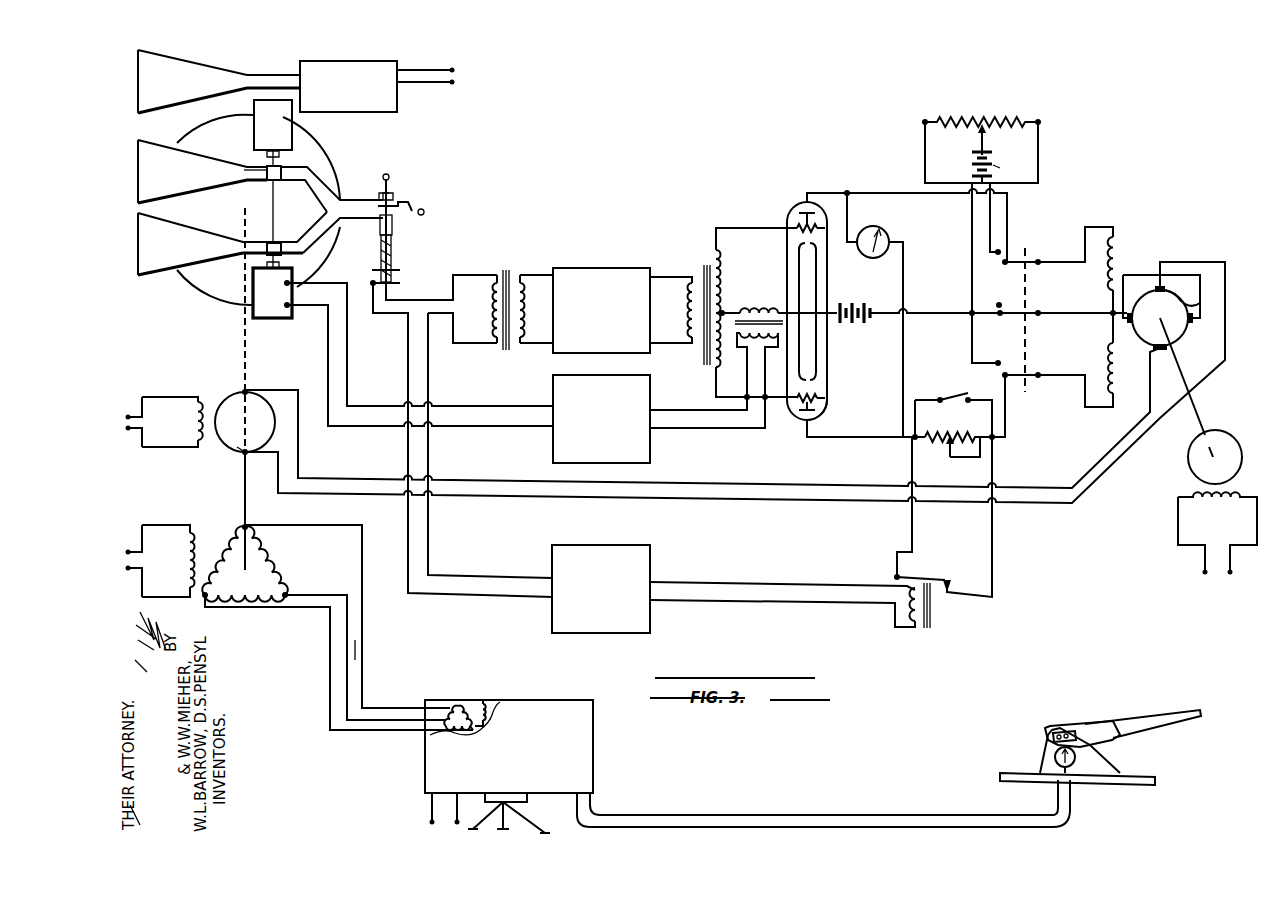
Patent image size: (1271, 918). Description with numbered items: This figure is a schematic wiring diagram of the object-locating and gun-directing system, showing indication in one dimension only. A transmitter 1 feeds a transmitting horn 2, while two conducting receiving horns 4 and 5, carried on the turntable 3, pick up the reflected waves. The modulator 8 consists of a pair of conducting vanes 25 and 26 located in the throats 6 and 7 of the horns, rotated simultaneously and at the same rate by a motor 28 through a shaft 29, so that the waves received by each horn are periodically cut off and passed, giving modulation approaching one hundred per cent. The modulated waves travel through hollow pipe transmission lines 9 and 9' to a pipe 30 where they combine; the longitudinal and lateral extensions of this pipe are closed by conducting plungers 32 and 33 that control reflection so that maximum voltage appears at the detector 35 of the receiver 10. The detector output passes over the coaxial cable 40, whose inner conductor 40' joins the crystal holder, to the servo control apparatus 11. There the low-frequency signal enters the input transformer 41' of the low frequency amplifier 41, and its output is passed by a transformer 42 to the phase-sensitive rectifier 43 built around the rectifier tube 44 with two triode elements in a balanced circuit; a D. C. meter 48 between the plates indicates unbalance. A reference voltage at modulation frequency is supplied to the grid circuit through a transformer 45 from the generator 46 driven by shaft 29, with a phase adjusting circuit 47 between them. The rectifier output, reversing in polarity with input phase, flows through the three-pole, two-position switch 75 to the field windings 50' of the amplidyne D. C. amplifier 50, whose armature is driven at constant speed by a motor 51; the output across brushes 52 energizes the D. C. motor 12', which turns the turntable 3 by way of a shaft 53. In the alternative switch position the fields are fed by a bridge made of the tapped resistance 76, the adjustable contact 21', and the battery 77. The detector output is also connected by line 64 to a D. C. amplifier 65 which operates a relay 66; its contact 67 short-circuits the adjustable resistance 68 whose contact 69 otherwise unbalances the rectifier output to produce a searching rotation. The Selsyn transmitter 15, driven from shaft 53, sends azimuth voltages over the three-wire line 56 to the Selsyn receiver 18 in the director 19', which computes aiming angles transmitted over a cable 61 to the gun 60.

The transmitter 1 is at (383, 112).
The transmitting horn 2 is at (215, 70).
The turntable 3 is at (200, 287).
The horn 4 is at (147, 144).
The horn 5 is at (153, 278).
The throat 6 is at (256, 168).
The throat 7 is at (242, 240).
The modulator 8 is at (281, 370).
The hollow pipe transmission line 9 is at (332, 177).
The hollow pipe transmission line 9' is at (323, 232).
The receiver 10 is at (438, 162).
The servo control apparatus 11 is at (767, 161).
The D. C. motor 12' is at (227, 457).
The Selsyn transmitter 15 is at (267, 636).
The Selsyn receiver 18 is at (474, 700).
The director 19' is at (747, 748).
The adjustable contact 21' is at (969, 243).
The vane 25 is at (282, 179).
The vane 26 is at (285, 243).
The motor 28 is at (332, 134).
The shaft 29 is at (273, 198).
The pipe 30 is at (367, 208).
The plunger 32 is at (392, 183).
The plunger 33 is at (420, 216).
The detector 35 is at (395, 234).
The coaxial cable 40 is at (401, 268).
The inner conductor 40' is at (461, 436).
The low frequency amplifier 41 is at (622, 298).
The input transformer 41' is at (523, 297).
The transformer 42 is at (698, 277).
The phase-sensitive demodulator or rectifier 43 is at (862, 354).
The rectifier tube 44 is at (826, 404).
The transformer 45 is at (753, 307).
The generator 46 is at (265, 310).
The phase adjusting circuit 47 is at (648, 452).
The D. C. meter 48 is at (890, 233).
The D. C. amplifier 50 is at (1168, 338).
The field windings 50' is at (1082, 317).
The motor 51 is at (1185, 468).
The brushes 52 is at (1196, 301).
The shaft 53 is at (253, 316).
The three-wire line 56 is at (373, 666).
The gun 60 is at (1110, 719).
The cable 61 is at (847, 816).
The line 64 is at (490, 597).
The D. C. amplifier 65 is at (596, 548).
The relay 66 is at (913, 630).
The contact 67 is at (961, 569).
The adjustable resistance 68 is at (972, 432).
The adjustable contact 69 is at (950, 443).
The three-pole, two-position switch 75 is at (1039, 240).
The tapped resistance 76 is at (967, 119).
The battery 77 is at (995, 165).